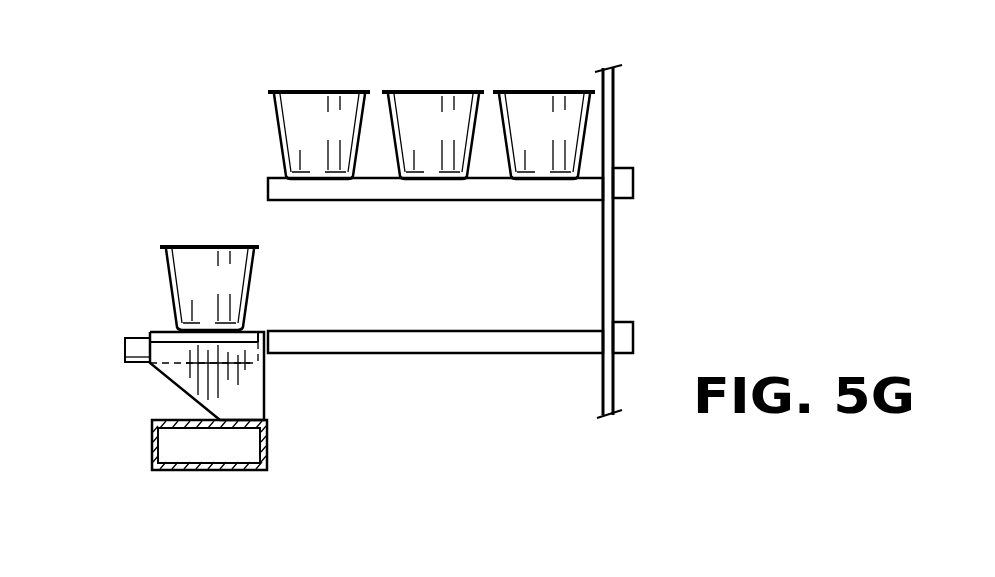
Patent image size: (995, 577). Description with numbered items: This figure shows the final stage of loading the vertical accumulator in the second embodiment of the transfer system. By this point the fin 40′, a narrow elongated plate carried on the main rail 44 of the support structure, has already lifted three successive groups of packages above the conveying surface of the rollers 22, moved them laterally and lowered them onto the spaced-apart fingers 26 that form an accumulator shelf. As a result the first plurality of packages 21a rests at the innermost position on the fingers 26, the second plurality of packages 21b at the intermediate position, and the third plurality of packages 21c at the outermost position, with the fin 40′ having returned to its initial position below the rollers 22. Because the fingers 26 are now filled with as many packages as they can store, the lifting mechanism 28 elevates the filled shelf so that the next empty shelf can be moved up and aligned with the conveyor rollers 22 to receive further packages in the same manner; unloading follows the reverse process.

The first plurality of packages 21a is at (573, 133).
The second plurality of packages 21b is at (462, 133).
The third plurality of packages 21c is at (348, 133).
The rollers 22 is at (165, 334).
The fingers 26 is at (403, 188).
The lifting mechanism 28 is at (614, 263).
The fin 40′ is at (263, 385).
The main rail 44 is at (152, 455).